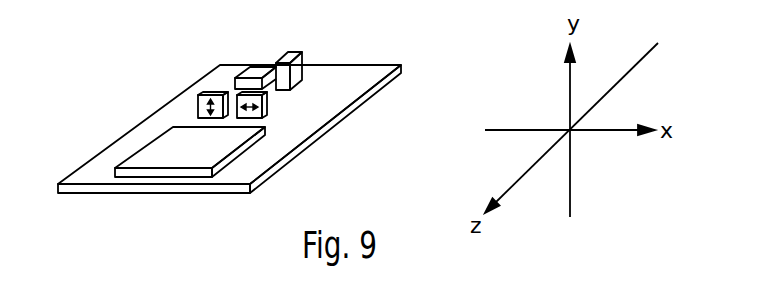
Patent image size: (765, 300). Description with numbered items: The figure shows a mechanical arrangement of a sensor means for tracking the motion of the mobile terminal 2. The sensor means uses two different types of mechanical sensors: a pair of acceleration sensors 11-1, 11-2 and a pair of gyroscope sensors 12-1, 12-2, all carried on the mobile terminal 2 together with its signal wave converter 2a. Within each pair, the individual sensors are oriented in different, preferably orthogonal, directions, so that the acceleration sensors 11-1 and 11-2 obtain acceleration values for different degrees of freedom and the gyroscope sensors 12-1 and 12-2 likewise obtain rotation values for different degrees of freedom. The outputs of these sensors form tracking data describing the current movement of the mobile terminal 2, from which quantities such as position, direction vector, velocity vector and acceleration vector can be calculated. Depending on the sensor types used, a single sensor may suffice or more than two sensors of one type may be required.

The mobile terminal 2 is at (258, 169).
The signal wave converter 2a is at (145, 157).
The acceleration sensor 11-1 is at (197, 107).
The acceleration sensor 11-2 is at (268, 107).
The gyroscope sensor 12-1 is at (250, 67).
The gyroscope sensor 12-2 is at (303, 56).